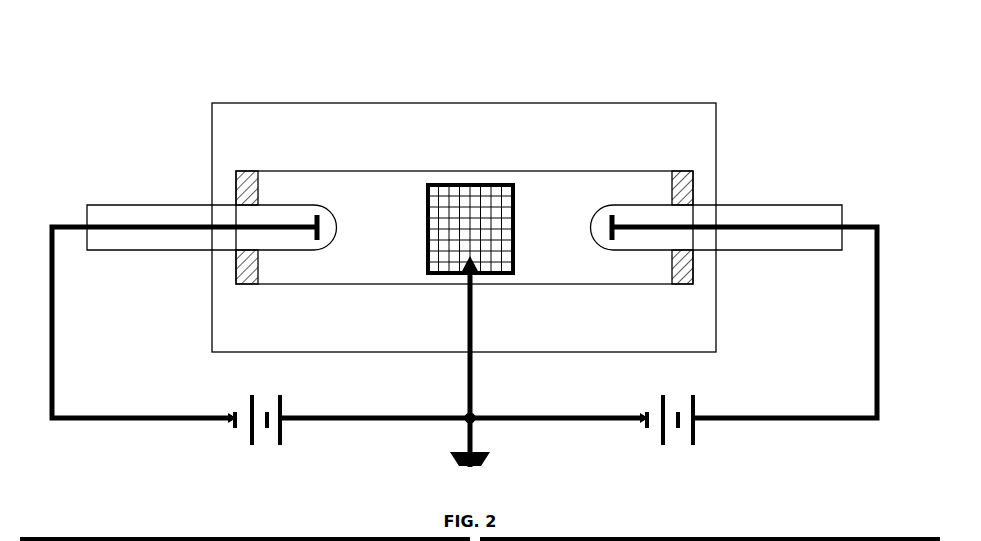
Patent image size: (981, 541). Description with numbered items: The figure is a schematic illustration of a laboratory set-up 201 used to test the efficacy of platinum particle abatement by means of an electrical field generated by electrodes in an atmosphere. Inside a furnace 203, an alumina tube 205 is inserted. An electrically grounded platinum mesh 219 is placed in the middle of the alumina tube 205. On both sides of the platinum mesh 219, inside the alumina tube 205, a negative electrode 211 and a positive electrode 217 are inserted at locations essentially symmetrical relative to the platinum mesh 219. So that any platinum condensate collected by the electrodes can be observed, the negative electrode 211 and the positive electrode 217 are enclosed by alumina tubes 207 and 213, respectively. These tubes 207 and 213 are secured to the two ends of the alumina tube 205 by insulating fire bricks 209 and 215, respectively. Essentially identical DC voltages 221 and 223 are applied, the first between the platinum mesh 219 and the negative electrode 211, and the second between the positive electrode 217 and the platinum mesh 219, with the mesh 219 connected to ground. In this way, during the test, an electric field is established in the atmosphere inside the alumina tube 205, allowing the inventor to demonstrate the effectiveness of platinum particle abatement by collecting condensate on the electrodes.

The set-up 201 is at (502, 50).
The furnace 203 is at (310, 112).
The alumina tube 205 is at (602, 170).
The alumina tube 207 is at (155, 204).
The insulating fire brick 209 is at (240, 190).
The negative electrode 211 is at (101, 233).
The alumina tube 213 is at (760, 202).
The insulating fire brick 215 is at (690, 188).
The positive electrode 217 is at (805, 225).
The platinum mesh 219 is at (479, 204).
The DC voltage 221 is at (352, 431).
The DC voltage 223 is at (581, 431).